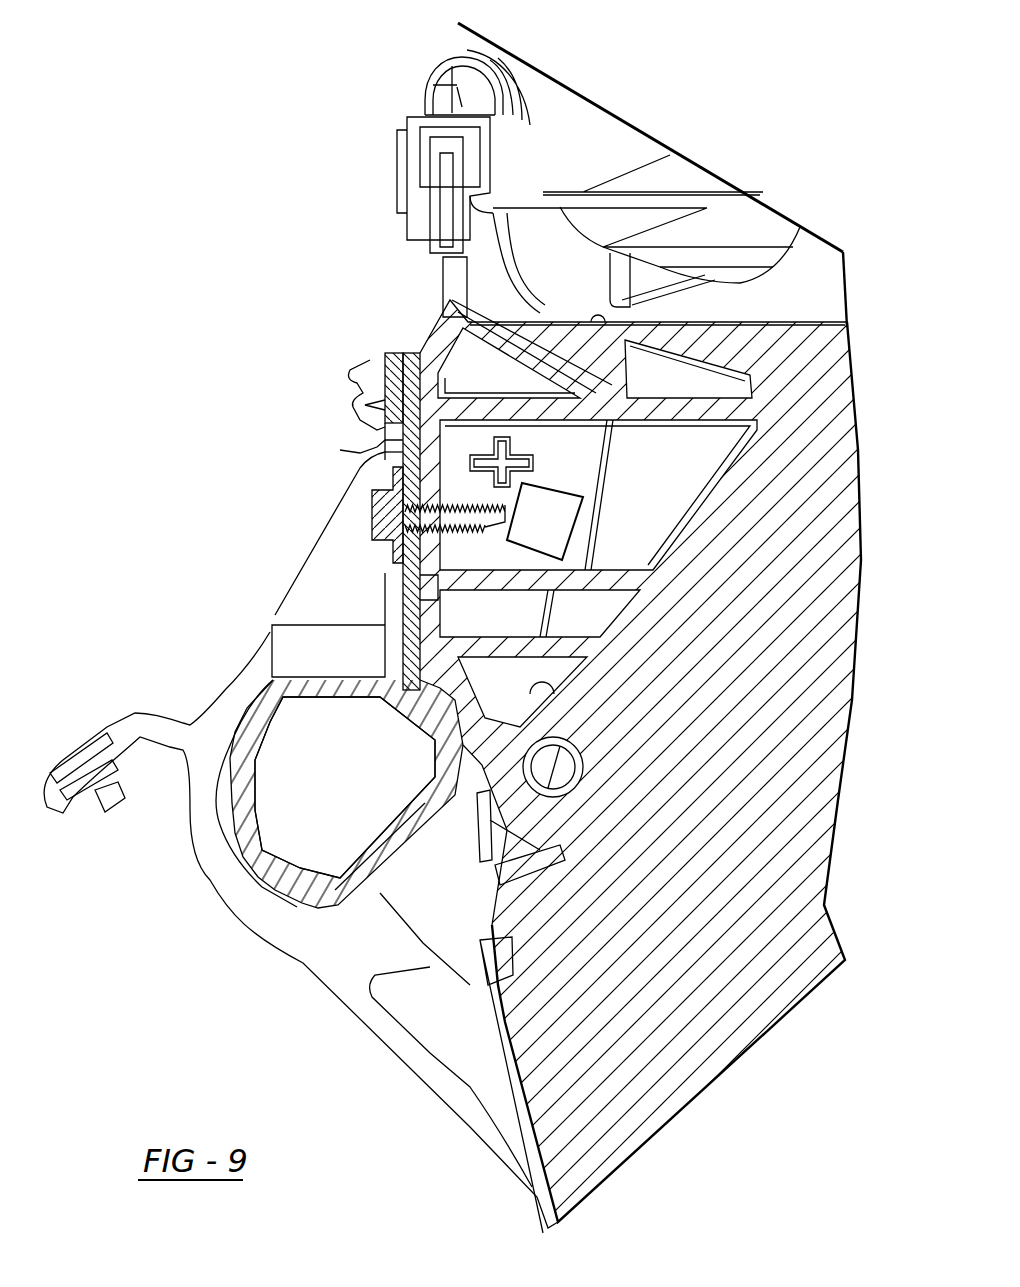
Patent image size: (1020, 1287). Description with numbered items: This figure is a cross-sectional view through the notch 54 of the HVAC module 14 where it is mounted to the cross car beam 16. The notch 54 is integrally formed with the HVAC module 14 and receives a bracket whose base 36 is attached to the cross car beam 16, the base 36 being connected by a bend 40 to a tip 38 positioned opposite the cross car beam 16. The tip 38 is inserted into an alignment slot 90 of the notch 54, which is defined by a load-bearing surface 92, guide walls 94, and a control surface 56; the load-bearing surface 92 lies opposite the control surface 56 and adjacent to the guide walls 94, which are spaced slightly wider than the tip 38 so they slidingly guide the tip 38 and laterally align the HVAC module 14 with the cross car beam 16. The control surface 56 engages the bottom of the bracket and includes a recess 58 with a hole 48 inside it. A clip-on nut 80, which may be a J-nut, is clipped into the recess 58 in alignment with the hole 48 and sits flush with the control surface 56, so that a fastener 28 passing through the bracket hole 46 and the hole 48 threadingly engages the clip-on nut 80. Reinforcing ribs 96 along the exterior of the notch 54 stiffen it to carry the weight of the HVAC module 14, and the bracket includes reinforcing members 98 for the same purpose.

The HVAC module 14 is at (738, 692).
The cross car beam 16 is at (233, 830).
The fastener 28 is at (372, 527).
The base 36 is at (402, 607).
The tip 38 is at (408, 392).
The bend 40 is at (377, 442).
The hole 46 is at (402, 585).
The hole 48 is at (433, 500).
The notch 54 is at (385, 450).
The control surface 56 is at (417, 392).
The recess 58 is at (423, 478).
The clip-on nut 80 is at (510, 556).
The alignment slot 90 is at (400, 452).
The load-bearing surface 92 is at (380, 402).
The guide walls 94 is at (410, 393).
The reinforcing ribs 96 is at (357, 377).
The reinforcing members 98 is at (332, 647).